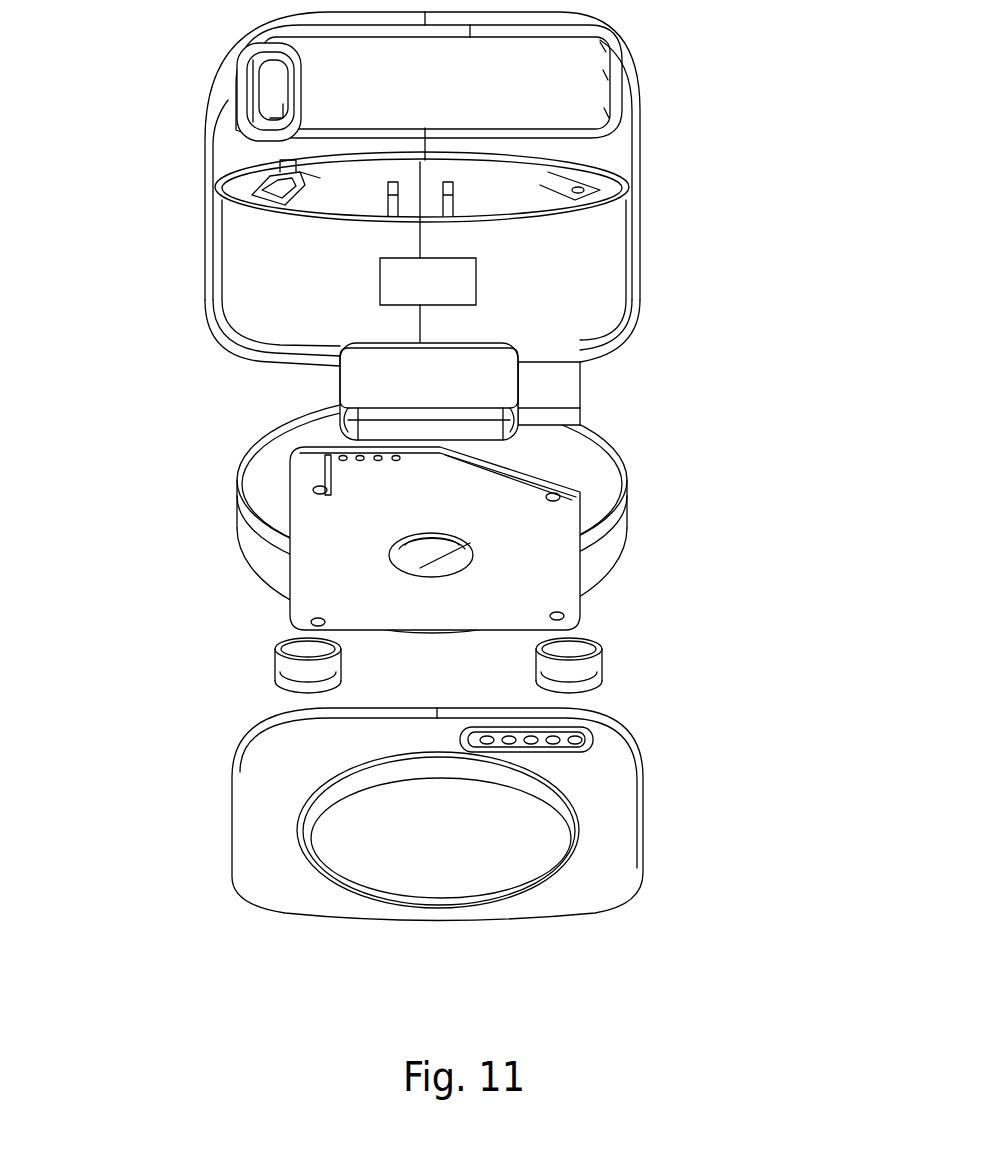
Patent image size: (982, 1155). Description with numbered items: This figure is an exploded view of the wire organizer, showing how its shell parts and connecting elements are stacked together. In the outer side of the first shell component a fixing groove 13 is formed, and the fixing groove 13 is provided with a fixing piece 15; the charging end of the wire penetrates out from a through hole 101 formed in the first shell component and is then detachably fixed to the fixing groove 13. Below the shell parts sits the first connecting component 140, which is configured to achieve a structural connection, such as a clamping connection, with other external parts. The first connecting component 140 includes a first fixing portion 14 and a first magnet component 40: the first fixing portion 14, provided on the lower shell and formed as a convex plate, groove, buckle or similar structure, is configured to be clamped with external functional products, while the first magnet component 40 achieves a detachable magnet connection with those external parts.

The through hole 101 is at (265, 97).
The fixing groove 13 is at (500, 97).
The fixing piece 15 is at (430, 283).
The first magnet component 40 is at (567, 680).
The first fixing portion 14 is at (483, 845).
The first connecting component 140 is at (554, 779).